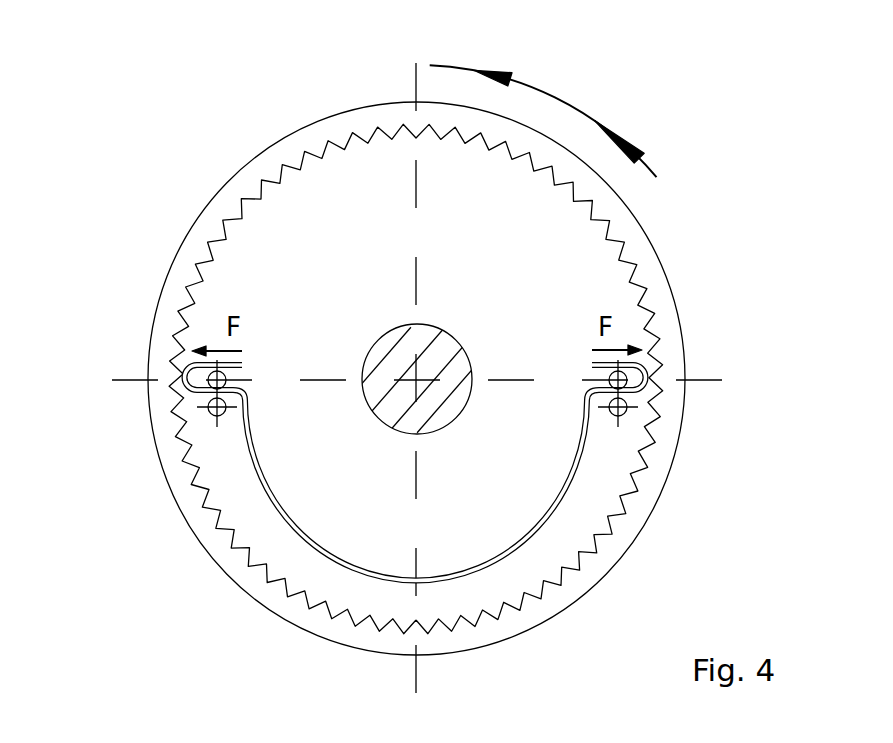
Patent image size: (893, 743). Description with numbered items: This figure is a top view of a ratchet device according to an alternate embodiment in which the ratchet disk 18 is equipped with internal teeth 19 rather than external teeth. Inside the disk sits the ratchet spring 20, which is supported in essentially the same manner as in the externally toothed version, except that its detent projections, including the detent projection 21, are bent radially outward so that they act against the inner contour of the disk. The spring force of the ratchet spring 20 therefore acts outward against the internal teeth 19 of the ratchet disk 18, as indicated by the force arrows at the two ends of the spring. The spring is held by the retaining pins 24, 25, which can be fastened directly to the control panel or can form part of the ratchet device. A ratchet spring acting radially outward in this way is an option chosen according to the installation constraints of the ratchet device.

The ratchet disk 18 is at (551, 276).
The internal teeth 19 is at (645, 285).
The ratchet spring 20 is at (570, 488).
The detent projection 21 is at (645, 362).
The retaining pin 24 is at (650, 390).
The retaining pin 25 is at (208, 380).